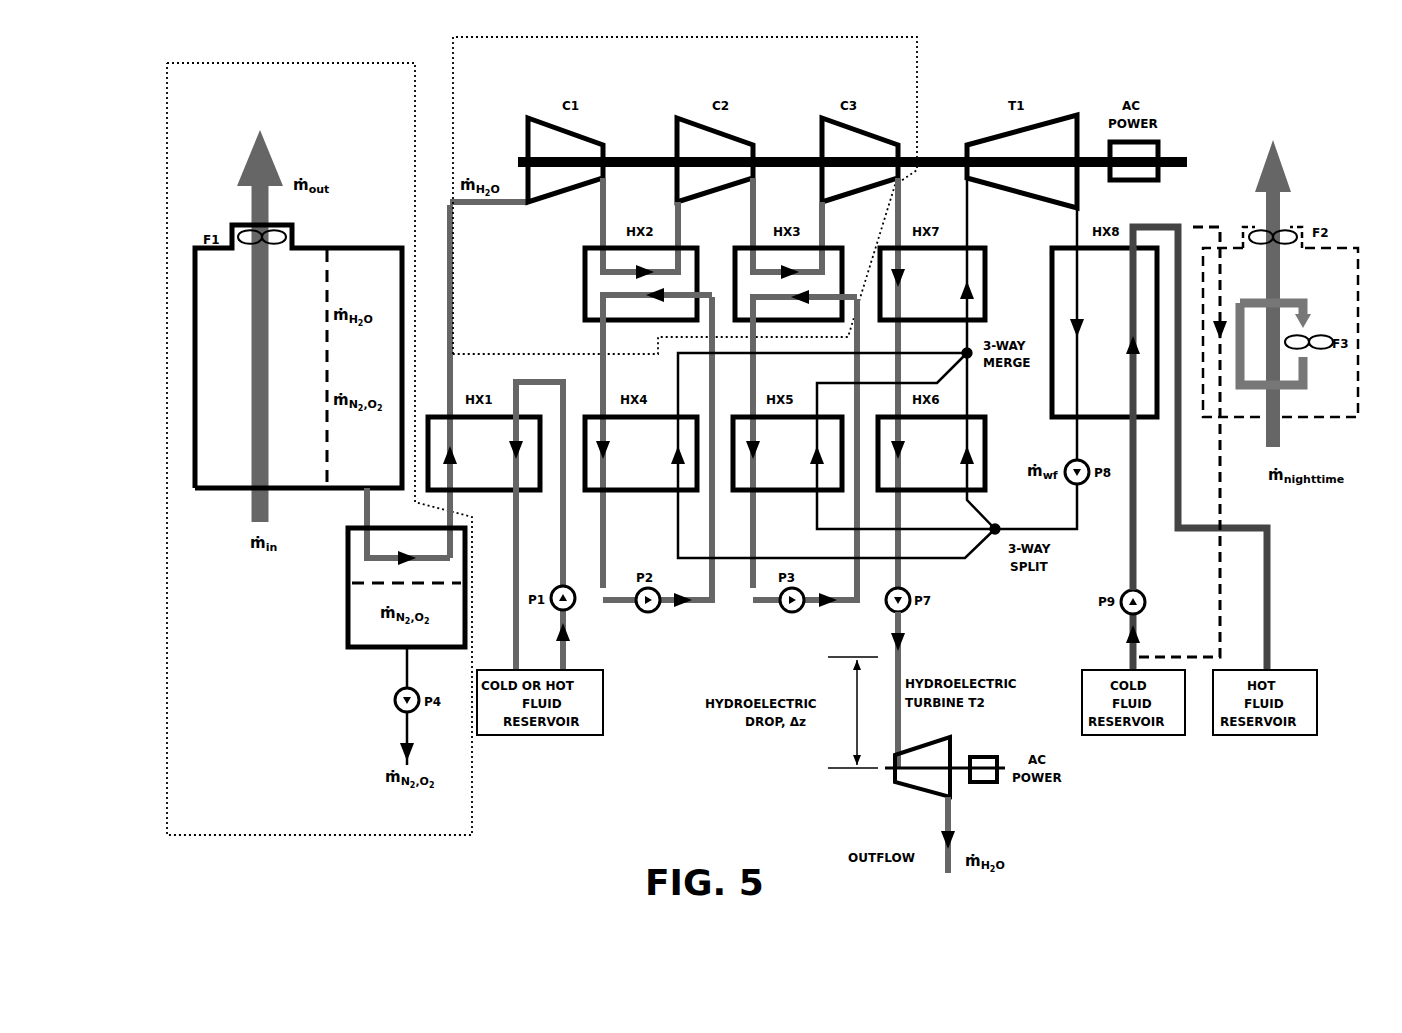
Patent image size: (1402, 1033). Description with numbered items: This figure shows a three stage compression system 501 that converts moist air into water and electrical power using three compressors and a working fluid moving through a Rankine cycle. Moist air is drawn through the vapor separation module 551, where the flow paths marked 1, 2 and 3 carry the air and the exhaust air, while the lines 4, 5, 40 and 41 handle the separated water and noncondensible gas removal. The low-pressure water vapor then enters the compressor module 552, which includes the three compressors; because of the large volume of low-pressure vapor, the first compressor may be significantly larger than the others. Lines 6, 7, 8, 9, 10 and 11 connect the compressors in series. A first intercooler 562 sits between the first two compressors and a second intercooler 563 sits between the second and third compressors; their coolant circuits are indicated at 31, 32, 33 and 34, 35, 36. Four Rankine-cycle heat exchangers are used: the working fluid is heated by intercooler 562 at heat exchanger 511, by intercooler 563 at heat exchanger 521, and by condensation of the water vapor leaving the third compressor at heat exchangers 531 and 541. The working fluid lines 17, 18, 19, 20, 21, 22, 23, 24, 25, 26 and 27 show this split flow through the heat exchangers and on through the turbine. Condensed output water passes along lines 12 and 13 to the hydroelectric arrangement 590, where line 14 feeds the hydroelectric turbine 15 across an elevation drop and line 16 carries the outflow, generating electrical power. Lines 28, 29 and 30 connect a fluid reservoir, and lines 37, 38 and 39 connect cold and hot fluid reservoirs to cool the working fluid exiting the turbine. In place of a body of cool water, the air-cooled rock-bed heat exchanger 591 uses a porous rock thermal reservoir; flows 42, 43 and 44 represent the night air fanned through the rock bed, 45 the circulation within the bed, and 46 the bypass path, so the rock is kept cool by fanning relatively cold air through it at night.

The moist air inlet stream 1 is at (270, 505).
The air stream in condenser 2 is at (270, 359).
The dry air outlet stream 3 is at (260, 180).
The condensate line to noncondensible gas removal 4 is at (408, 526).
The water line through HX1 5 is at (453, 381).
The water line to compressor C1 6 is at (489, 213).
The compressor C1 outlet line 7 is at (621, 225).
The compressor C2 inlet line 8 is at (665, 240).
The compressor C2 outlet line 9 is at (770, 225).
The compressor C3 inlet line 10 is at (815, 240).
The compressor C3 outlet line 11 is at (911, 213).
The water line through HX7 12 is at (889, 332).
The water line through HX6 13 is at (888, 502).
The water line to hydroelectric turbine 14 is at (909, 690).
The hydroelectric turbine T2 15 is at (945, 757).
The turbine outflow line 16 is at (961, 835).
The working fluid line to 3-way split 17 is at (1036, 506).
The working fluid line into HX6 18 is at (969, 473).
The working fluid line into HX5 19 is at (902, 473).
The working fluid line into HX4 20 is at (823, 487).
The working fluid line from HX4 to merge 21 is at (822, 385).
The working fluid line from HX5 to merge 22 is at (892, 385).
The working fluid line from HX6 to merge 23 is at (983, 385).
The merged working fluid line through HX7 24 is at (959, 300).
The turbine T1 inlet line 25 is at (956, 213).
The turbine T1 outlet line 26 is at (1068, 312).
The working fluid line to pump P8 27 is at (1062, 438).
The reservoir fluid line to pump P1 28 is at (554, 640).
The fluid line into HX1 29 is at (539, 474).
The fluid return line to reservoir 30 is at (507, 543).
The pump P2 outlet line to HX2 31 is at (662, 461).
The HX2 return line to HX4 32 is at (654, 438).
The HX4 outlet line to pump P2 33 is at (615, 525).
The pump P3 outlet line to HX3 34 is at (808, 462).
The HX3 return line to HX5 35 is at (801, 439).
The HX5 outlet line to pump P3 36 is at (765, 525).
The cold fluid line from pump P9 37 is at (1120, 642).
The cold fluid line through HX8 38 is at (1121, 419).
The hot fluid line to hot fluid reservoir 39 is at (1200, 435).
The noncondensible gas line 40 is at (421, 667).
The noncondensible gas discharge line 41 is at (417, 738).
The nighttime air inlet stream 42 is at (1291, 433).
The air stream through rock bed 43 is at (1289, 275).
The rock bed air outlet stream 44 is at (1280, 293).
The recirculation loop in rock bed 45 is at (1271, 359).
The bypass line to rock bed 46 is at (1194, 442).
The three stage compression system 501 is at (1113, 27).
The Rankine-cycle heat exchanger HX4 511 is at (646, 495).
The Rankine-cycle heat exchanger HX5 521 is at (798, 496).
The Rankine-cycle heat exchanger HX6 531 is at (928, 493).
The Rankine-cycle heat exchanger HX7 541 is at (992, 270).
The vapor separation module 551 is at (283, 76).
The compressor module 552 is at (833, 50).
The first intercooler 562 is at (684, 248).
The second intercooler 563 is at (806, 248).
The hydroelectric generation arrangement 590 is at (975, 793).
The air-cooled rock-bed heat exchanger 591 is at (1322, 423).